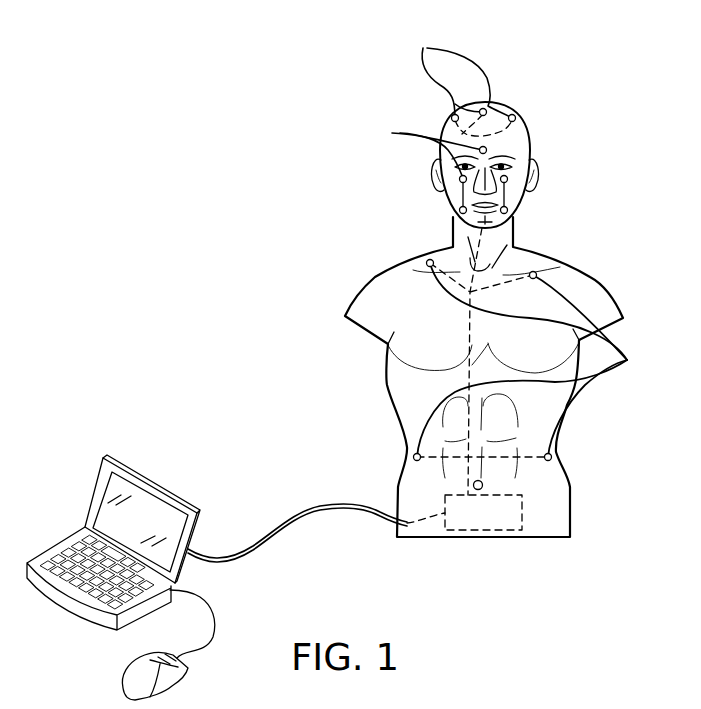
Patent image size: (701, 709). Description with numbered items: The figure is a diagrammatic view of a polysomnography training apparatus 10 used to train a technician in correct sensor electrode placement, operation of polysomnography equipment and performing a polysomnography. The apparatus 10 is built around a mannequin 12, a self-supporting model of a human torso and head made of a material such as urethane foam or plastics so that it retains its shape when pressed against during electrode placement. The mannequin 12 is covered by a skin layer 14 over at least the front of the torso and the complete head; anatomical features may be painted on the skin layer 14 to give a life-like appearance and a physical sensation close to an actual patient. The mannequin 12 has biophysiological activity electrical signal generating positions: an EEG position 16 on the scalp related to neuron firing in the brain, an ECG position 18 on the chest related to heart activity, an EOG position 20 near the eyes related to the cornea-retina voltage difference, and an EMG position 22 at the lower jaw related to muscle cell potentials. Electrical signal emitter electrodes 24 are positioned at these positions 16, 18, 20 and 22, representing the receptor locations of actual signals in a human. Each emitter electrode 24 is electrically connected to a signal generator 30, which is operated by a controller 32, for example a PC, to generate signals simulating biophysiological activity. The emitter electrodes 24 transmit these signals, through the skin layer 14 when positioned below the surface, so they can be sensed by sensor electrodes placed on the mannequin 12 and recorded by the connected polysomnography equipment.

The polysomnography training apparatus 10 is at (272, 150).
The mannequin 12 is at (552, 258).
The skin layer 14 is at (549, 353).
The EEG position 16 is at (508, 93).
The ECG position 18 is at (428, 343).
The EOG position 20 is at (546, 125).
The EMG position 22 is at (440, 216).
The electrical signal emitter electrodes 24 is at (512, 242).
The signal generator 30 is at (480, 528).
The controller 32 is at (152, 482).